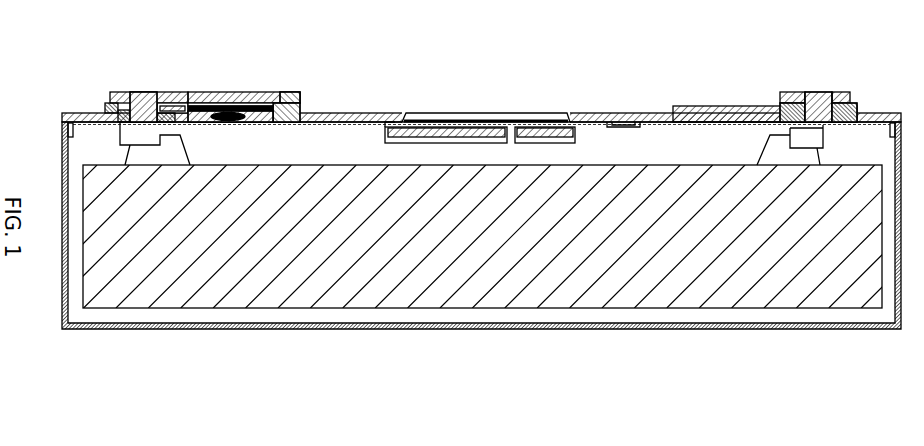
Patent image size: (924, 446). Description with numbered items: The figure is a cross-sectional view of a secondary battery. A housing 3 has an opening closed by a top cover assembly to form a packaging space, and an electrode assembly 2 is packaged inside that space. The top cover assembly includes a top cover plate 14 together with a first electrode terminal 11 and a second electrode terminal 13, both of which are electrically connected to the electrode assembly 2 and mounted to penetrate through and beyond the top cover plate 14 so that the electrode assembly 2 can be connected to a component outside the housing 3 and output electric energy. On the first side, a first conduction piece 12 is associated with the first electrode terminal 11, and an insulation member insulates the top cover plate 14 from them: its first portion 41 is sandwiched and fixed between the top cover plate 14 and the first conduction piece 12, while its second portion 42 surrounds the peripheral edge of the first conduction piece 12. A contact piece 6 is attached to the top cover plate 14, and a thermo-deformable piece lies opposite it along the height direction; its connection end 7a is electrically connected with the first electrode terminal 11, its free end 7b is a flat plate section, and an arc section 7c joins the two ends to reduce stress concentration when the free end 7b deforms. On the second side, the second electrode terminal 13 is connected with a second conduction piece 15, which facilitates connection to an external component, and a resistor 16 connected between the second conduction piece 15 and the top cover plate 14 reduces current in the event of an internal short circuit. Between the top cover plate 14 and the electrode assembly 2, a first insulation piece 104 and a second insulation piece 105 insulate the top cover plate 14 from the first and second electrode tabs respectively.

The electrode assembly 2 is at (528, 250).
The housing 3 is at (332, 329).
The top cover plate 14 is at (93, 113).
The first portion 41 is at (106, 108).
The first conduction piece 12 is at (126, 92).
The first electrode terminal 11 is at (147, 92).
The connection end 7a is at (195, 91).
The arc section 7c is at (208, 98).
The free end 7b is at (237, 98).
The contact piece 6 is at (250, 97).
The second portion 42 is at (288, 95).
The first insulation piece 104 is at (427, 127).
The second insulation piece 105 is at (549, 127).
The resistor 16 is at (780, 94).
The second electrode terminal 13 is at (812, 96).
The second conduction piece 15 is at (843, 92).